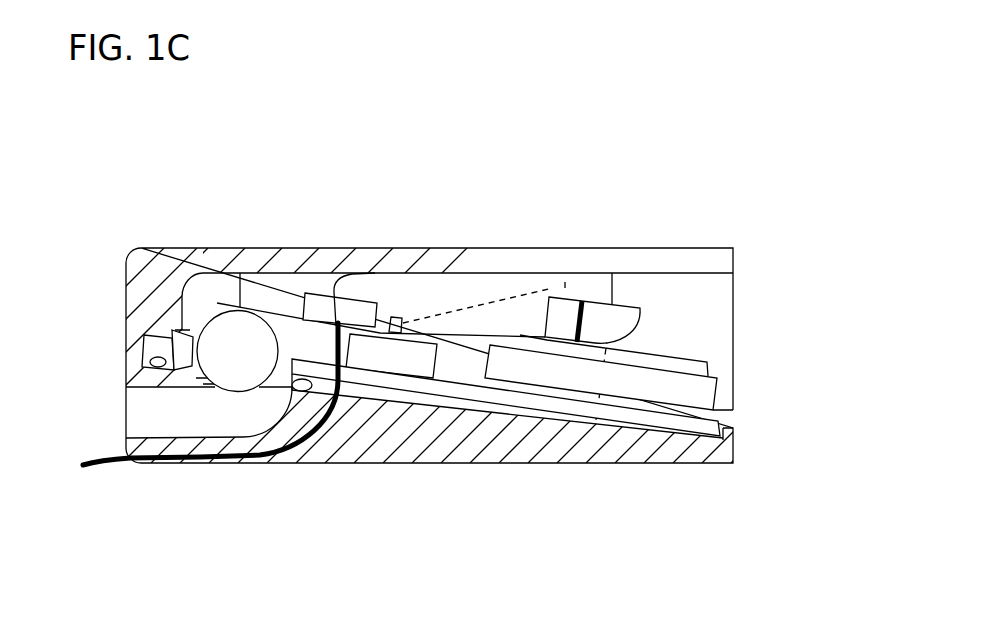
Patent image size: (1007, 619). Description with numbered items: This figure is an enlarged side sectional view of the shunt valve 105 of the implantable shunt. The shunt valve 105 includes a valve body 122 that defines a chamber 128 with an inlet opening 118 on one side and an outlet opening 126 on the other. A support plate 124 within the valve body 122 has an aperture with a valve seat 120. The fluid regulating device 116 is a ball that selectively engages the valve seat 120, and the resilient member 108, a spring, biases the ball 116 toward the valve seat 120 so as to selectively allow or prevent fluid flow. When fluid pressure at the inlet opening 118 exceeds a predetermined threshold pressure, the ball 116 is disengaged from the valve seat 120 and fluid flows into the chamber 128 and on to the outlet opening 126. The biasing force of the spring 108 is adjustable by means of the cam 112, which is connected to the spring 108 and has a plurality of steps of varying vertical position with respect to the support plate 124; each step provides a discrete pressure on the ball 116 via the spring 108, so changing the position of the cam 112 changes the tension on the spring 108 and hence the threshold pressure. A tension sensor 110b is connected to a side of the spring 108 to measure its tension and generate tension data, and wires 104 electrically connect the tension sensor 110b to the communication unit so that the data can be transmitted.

The shunt valve 105 is at (452, 103).
The wires 104 is at (307, 447).
The resilient member 108 is at (278, 313).
The tension sensor 110b is at (352, 312).
The cam 112 is at (676, 306).
The fluid regulating device 116 is at (220, 340).
The inlet opening 118 is at (150, 408).
The valve seat 120 is at (275, 370).
The valve body 122 is at (515, 440).
The support plate 124 is at (692, 430).
The outlet opening 126 is at (735, 418).
The chamber 128 is at (710, 326).